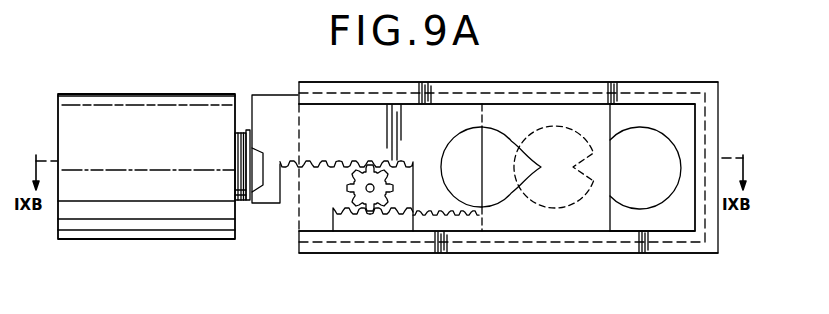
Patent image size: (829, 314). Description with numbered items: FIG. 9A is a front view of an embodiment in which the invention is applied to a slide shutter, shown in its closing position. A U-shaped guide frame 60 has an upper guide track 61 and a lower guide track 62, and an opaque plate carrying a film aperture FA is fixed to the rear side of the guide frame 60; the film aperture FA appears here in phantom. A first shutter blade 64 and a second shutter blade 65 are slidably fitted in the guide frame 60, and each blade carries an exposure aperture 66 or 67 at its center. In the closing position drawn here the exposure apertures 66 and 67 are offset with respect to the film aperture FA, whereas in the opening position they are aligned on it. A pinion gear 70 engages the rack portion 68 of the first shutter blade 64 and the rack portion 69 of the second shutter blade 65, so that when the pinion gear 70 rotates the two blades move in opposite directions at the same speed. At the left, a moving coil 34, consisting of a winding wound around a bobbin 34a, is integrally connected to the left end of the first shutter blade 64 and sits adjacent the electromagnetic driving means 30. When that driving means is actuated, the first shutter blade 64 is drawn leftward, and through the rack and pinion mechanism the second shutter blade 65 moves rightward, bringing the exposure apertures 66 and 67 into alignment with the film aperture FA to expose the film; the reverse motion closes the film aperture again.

The drive unit 30 is at (152, 92).
The moving coil 34 is at (235, 201).
The bobbin 34a is at (257, 155).
The guide frame 60 is at (724, 136).
The upper guide track 61 is at (527, 238).
The lower guide track 62 is at (468, 100).
The first shutter blade 64 is at (590, 216).
The second shutter blade 65 is at (678, 216).
The exposure aperture 66 is at (447, 158).
The exposure aperture 67 is at (647, 139).
The rack portion 68 is at (338, 172).
The rack portion 69 is at (393, 217).
The pinion gear 70 is at (371, 172).
The film aperture FA is at (556, 127).